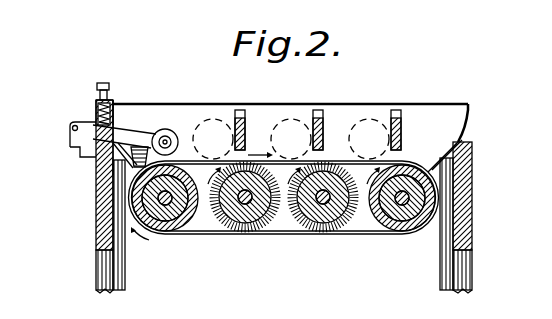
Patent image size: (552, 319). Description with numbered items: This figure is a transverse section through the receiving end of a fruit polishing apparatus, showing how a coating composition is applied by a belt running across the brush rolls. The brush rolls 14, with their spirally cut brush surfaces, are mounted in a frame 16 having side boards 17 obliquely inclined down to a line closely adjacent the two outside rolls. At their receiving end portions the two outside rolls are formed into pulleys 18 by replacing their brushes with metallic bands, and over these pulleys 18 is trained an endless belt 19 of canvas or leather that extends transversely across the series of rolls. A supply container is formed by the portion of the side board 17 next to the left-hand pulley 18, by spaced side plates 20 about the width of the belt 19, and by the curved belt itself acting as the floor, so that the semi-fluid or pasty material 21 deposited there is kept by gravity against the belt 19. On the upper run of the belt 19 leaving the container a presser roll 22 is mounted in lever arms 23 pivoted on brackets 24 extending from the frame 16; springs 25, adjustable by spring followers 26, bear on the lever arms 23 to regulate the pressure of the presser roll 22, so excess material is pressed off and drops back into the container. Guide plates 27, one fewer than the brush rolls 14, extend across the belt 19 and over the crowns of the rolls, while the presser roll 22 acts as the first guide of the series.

The brush rolls 14 is at (316, 212).
The frame 16 is at (99, 237).
The side boards 17 is at (115, 160).
The pulleys 18 is at (192, 218).
The endless belt 19 is at (326, 161).
The side plates 20 is at (130, 152).
The semi-fluid or pasty material 21 is at (145, 130).
The presser roll 22 is at (160, 125).
The lever arms 23 is at (118, 127).
The brackets 24 is at (70, 137).
The springs 25 is at (96, 106).
The spring followers 26 is at (100, 87).
The guide plates 27 is at (244, 116).